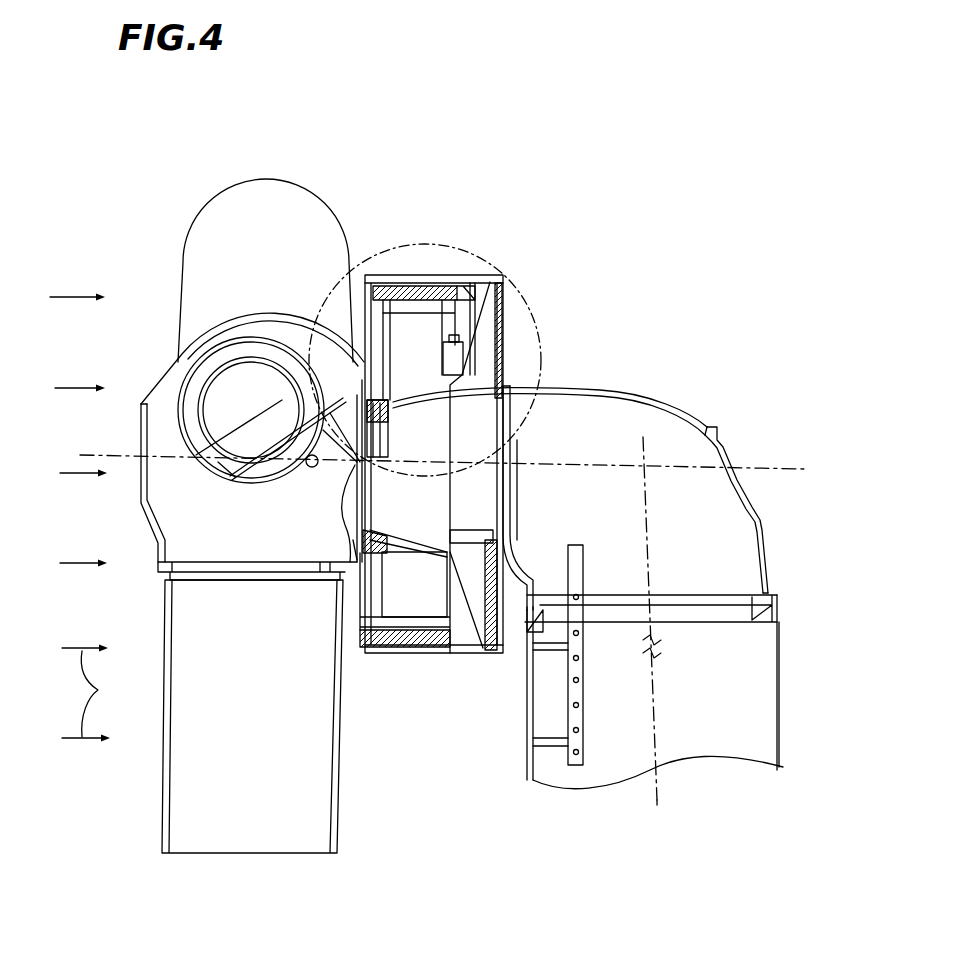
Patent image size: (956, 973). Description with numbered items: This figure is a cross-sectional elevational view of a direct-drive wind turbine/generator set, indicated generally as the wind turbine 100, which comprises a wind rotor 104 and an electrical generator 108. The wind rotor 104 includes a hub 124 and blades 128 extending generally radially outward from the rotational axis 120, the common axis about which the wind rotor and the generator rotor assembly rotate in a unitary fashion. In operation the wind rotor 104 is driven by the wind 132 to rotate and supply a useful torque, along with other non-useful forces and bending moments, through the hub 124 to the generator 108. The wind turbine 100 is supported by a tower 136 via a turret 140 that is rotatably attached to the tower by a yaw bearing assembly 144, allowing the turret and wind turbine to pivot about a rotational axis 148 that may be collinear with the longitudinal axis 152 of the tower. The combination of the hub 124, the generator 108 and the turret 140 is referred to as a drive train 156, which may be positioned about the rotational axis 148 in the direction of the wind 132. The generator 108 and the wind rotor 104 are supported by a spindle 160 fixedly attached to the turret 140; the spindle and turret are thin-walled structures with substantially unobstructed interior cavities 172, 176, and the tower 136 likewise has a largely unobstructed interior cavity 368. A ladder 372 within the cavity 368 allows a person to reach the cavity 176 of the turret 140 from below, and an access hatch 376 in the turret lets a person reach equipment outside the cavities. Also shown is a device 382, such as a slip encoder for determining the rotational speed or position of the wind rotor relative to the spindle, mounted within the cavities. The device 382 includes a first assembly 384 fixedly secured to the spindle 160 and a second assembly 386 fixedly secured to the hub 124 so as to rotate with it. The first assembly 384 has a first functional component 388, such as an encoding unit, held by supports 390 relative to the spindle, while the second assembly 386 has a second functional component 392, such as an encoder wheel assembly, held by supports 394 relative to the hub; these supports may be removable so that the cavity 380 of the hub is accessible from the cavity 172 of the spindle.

The wind turbine/generator set 100 is at (478, 367).
The wind rotor 104 is at (145, 280).
The electrical generator 108 is at (485, 253).
The rotational axis 120 is at (108, 455).
The hub 124 is at (137, 368).
The blades 128 is at (180, 243).
The wind 132 is at (112, 694).
The tower 136 is at (778, 688).
The turret 140 is at (695, 400).
The yaw bearing assembly 144 is at (790, 600).
The rotational axis 148 is at (643, 455).
The longitudinal axis 152 is at (657, 794).
The drive train 156 is at (588, 309).
The spindle 160 is at (450, 425).
The interior cavity 172 is at (488, 524).
The interior cavity 176 is at (616, 514).
The interior cavity 368 is at (736, 696).
The ladder 372 is at (568, 700).
The access hatch 376 is at (730, 448).
The cavity 380 is at (250, 526).
The device 382 is at (386, 495).
The first assembly 384 is at (412, 383).
The second assembly 386 is at (340, 403).
The first functional component 388 is at (350, 512).
The supports 390 is at (385, 478).
The second functional component 392 is at (333, 478).
The supports 394 is at (312, 420).